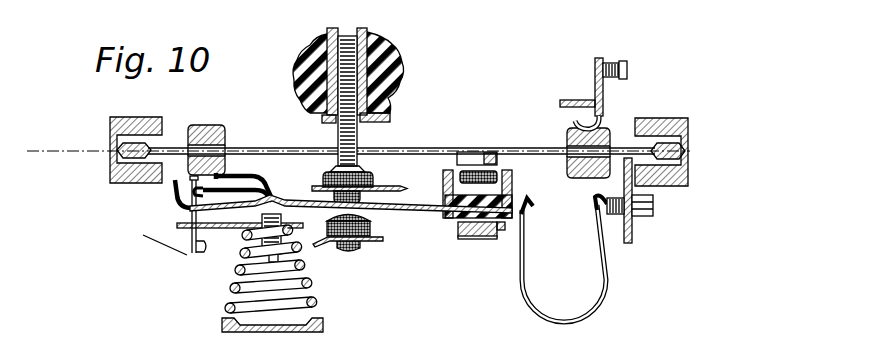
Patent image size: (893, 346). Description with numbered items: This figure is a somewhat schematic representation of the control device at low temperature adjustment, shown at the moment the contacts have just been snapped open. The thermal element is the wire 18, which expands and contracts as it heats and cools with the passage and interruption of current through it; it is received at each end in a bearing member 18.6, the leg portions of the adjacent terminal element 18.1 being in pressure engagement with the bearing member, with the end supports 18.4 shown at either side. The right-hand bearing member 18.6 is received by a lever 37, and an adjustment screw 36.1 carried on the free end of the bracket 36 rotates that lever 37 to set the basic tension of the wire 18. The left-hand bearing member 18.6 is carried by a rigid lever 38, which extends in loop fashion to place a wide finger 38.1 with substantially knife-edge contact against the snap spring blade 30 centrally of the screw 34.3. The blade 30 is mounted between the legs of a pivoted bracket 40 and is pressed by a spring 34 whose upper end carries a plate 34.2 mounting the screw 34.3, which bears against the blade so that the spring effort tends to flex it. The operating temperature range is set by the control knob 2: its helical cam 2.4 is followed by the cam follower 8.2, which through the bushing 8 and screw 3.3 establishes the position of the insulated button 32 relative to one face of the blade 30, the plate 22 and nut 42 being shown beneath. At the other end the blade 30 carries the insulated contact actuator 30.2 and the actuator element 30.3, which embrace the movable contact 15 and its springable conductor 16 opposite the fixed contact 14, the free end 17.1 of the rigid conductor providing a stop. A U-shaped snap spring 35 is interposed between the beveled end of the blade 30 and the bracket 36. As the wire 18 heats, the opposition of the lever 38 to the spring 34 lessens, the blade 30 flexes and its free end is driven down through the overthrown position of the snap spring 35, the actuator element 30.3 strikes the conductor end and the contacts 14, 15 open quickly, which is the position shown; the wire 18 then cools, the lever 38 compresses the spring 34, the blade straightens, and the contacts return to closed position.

The control knob 2 is at (398, 44).
The helical cam 2.4 is at (390, 112).
The adjusting screw 3.3 is at (362, 143).
The bushing 8 is at (370, 32).
The cam follower 8.2 is at (322, 119).
The fixed contact 14 is at (487, 148).
The movable contact 15 is at (502, 168).
The springable conductor 16 is at (465, 171).
The free end of conductor 17.1 is at (480, 239).
The wire 18 is at (273, 147).
The terminal element 18.1 is at (108, 150).
The bearing block 18.4 is at (156, 107).
The bearing member 18.6 is at (212, 113).
The plate 22 is at (393, 189).
The snap spring blade 30 is at (413, 216).
The insulated contact actuator 30.2 is at (485, 238).
The actuator element 30.3 is at (449, 216).
The insulated button 32 is at (376, 175).
The spring 34 is at (227, 310).
The plate 34.2 is at (190, 216).
The screw 34.3 is at (250, 245).
The snap spring 35 is at (613, 276).
The bracket 36 is at (633, 236).
The adjustment screw 36.1 is at (623, 62).
The lever 37 is at (590, 79).
The rigid lever 38 is at (243, 173).
The wide finger 38.1 is at (271, 194).
The bracket 40 is at (200, 256).
The nut 42 is at (350, 253).